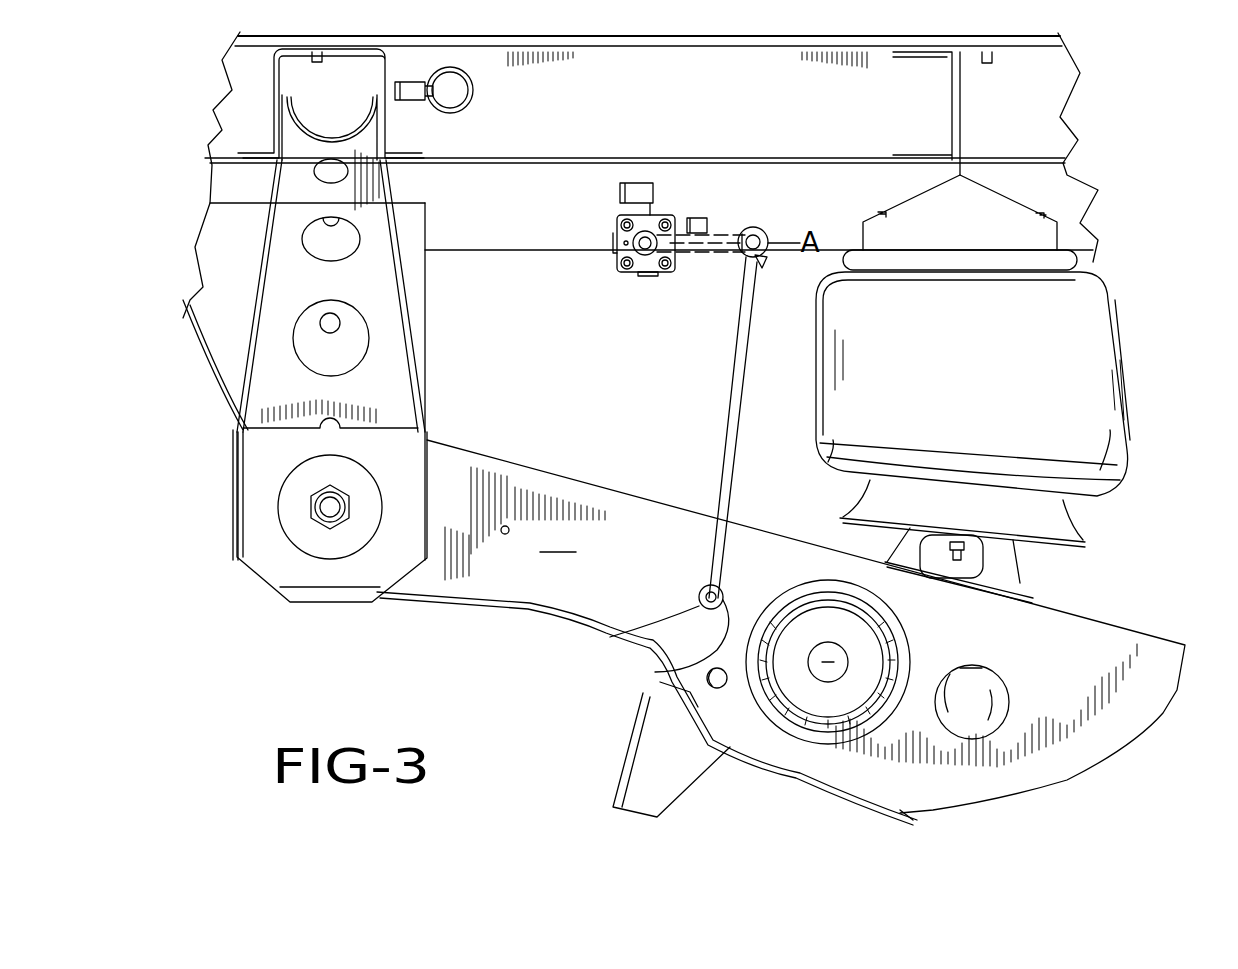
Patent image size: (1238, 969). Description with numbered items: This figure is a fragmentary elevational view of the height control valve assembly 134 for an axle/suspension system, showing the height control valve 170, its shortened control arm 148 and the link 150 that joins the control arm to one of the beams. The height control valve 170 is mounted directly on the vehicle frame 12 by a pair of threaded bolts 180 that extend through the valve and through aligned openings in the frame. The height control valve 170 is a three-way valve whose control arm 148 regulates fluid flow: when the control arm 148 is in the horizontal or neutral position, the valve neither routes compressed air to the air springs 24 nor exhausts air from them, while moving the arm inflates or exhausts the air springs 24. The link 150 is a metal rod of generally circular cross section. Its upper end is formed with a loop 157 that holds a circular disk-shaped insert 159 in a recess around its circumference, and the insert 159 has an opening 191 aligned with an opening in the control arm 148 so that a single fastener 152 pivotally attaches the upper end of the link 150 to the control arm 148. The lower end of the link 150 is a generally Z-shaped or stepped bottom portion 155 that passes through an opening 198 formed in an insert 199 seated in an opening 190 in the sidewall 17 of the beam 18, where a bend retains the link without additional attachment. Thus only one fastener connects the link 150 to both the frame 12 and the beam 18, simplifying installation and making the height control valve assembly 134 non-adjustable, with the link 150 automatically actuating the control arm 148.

The vehicle frame 12 is at (495, 252).
The sidewall 17 is at (791, 642).
The beam 18 is at (487, 458).
The air springs 24 is at (1112, 315).
The height control valve assembly 134 is at (610, 267).
The control arm 148 is at (713, 255).
The link 150 is at (722, 437).
The fastener 152 is at (760, 230).
The Z-shaped bottom portion 155 is at (726, 585).
The loop 157 is at (803, 280).
The insert 159 is at (765, 252).
The height control valve 170 is at (660, 277).
The threaded bolts 180 is at (670, 223).
The opening 190 is at (612, 636).
The opening 191 is at (745, 232).
The opening 198 is at (707, 593).
The insert 199 is at (667, 670).